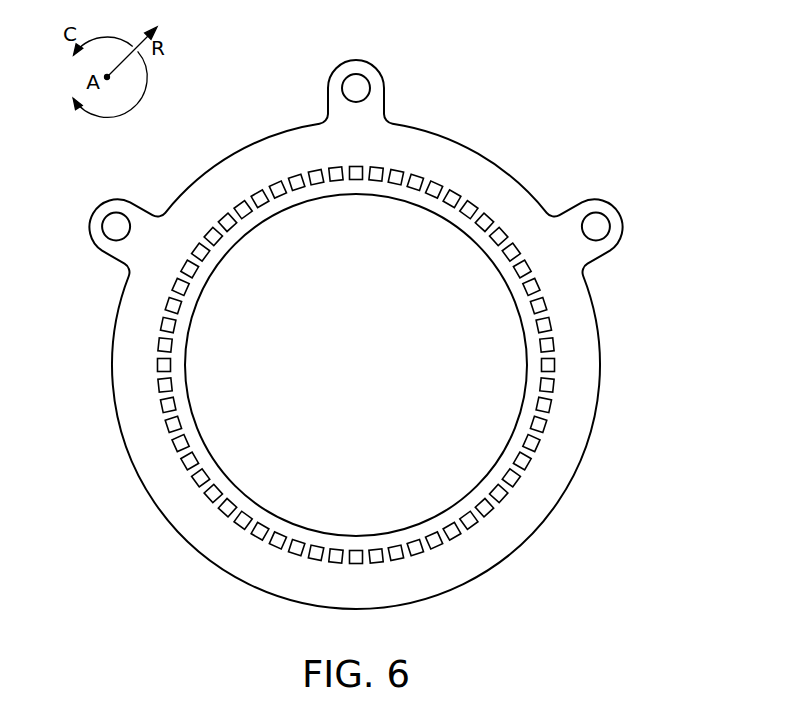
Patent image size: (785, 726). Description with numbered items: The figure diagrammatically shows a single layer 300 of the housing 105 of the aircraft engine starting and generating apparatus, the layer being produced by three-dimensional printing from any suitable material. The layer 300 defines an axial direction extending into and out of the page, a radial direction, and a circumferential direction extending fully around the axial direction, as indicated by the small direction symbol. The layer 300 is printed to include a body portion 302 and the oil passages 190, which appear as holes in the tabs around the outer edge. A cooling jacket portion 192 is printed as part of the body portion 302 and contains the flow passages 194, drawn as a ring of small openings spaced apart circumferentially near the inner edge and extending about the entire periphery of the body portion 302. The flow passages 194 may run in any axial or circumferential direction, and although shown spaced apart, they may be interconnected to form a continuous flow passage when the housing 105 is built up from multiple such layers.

The layer 300 is at (405, 323).
The housing 105 is at (610, 353).
The body portion 302 is at (587, 395).
The oil passages 190 is at (352, 90).
The cooling jacket portion 192 is at (507, 518).
The flow passages 194 is at (541, 425).